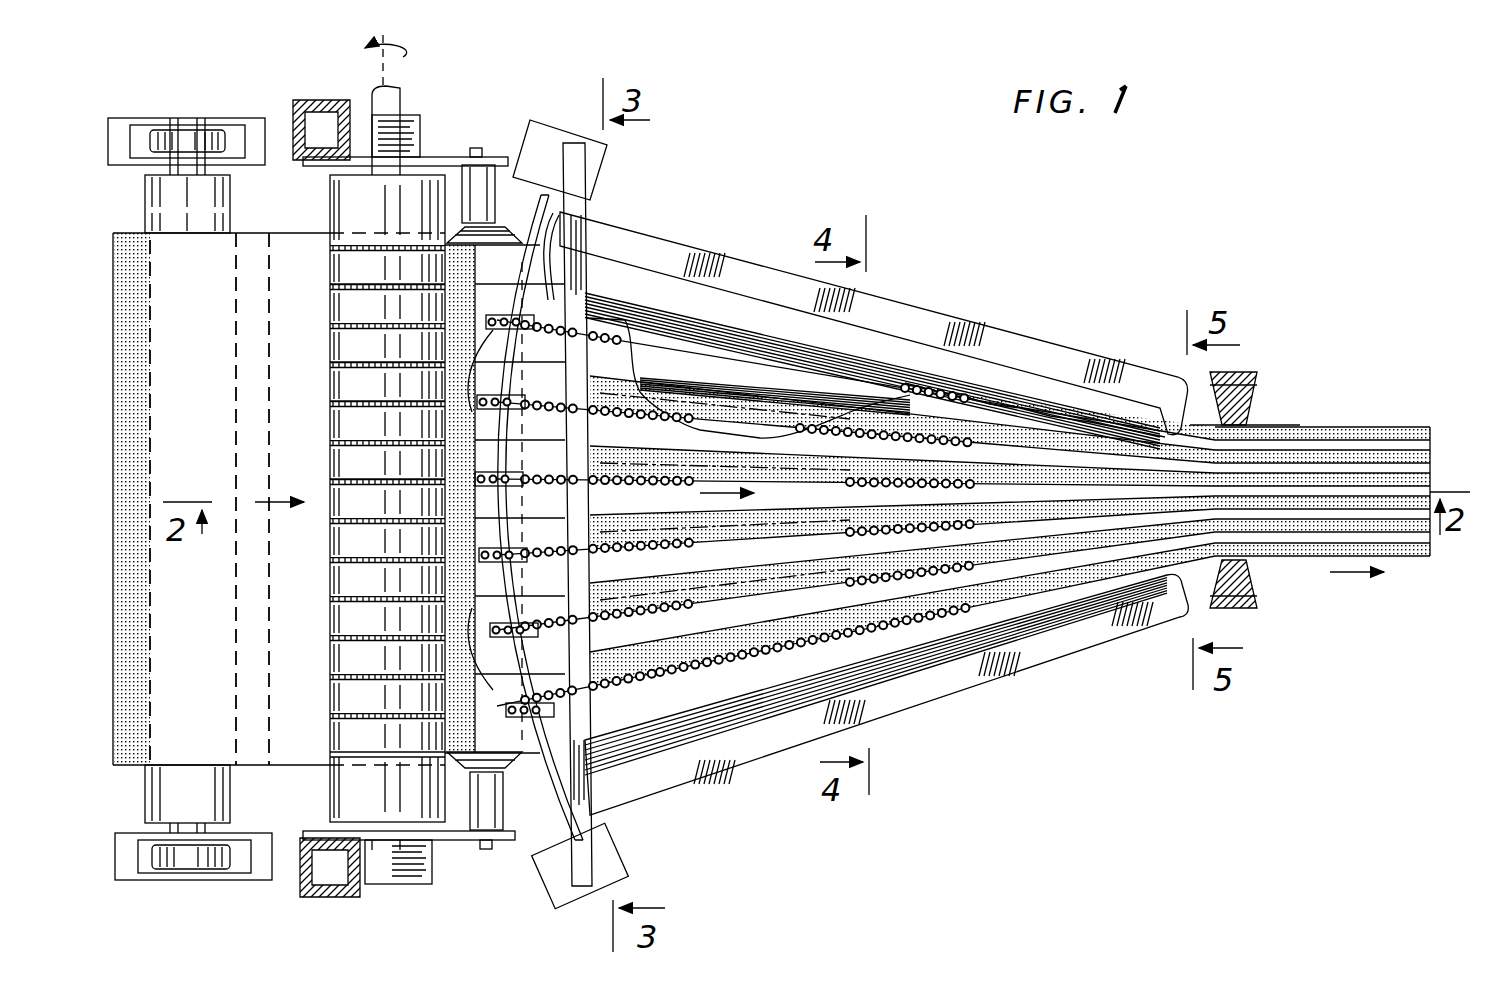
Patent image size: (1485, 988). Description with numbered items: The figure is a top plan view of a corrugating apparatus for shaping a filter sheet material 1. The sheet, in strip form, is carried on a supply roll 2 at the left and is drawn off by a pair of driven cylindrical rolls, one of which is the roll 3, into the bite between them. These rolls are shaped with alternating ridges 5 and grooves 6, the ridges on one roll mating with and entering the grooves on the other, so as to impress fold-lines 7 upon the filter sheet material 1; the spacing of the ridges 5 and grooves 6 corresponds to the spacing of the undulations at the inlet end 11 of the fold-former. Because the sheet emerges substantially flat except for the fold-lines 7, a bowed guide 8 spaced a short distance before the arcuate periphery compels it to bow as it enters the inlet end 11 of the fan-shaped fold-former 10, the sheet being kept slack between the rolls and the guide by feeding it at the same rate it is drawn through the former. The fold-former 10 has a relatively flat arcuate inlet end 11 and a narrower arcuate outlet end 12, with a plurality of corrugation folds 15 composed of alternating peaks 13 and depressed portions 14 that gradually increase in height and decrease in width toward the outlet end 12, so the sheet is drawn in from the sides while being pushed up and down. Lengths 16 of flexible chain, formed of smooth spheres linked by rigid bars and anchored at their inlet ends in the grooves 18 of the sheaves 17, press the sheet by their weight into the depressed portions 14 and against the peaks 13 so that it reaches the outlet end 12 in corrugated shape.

The filter sheet material 1 is at (1347, 435).
The supply roll 2 is at (223, 740).
The driven cylindrical roll 3 is at (345, 616).
The ridges 5 is at (330, 285).
The grooves 6 is at (330, 402).
The fold-lines 7 is at (470, 682).
The bowed guide 8 is at (546, 212).
The fan-shaped fold-former 10 is at (987, 322).
The inlet end 11 is at (545, 259).
The outlet end 12 is at (1172, 433).
The peaks 13 is at (657, 307).
The depressed portions 14 is at (720, 355).
The corrugation folds 15 is at (1103, 593).
The lengths of flexible chain 16 is at (660, 672).
The sheaves 17 is at (520, 637).
The grooves of the sheaves 18 is at (534, 705).